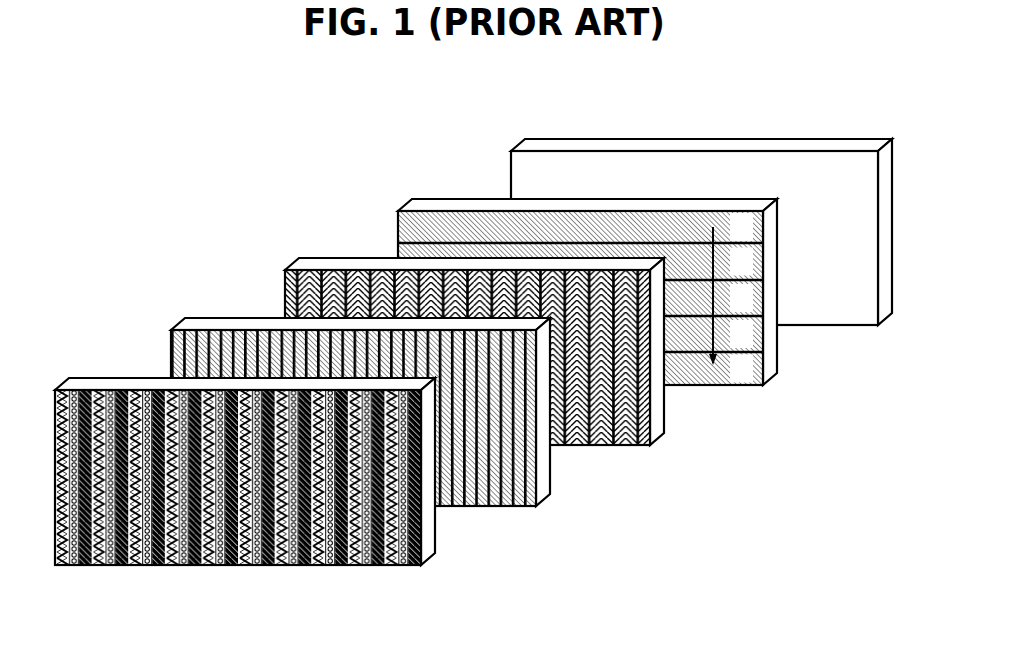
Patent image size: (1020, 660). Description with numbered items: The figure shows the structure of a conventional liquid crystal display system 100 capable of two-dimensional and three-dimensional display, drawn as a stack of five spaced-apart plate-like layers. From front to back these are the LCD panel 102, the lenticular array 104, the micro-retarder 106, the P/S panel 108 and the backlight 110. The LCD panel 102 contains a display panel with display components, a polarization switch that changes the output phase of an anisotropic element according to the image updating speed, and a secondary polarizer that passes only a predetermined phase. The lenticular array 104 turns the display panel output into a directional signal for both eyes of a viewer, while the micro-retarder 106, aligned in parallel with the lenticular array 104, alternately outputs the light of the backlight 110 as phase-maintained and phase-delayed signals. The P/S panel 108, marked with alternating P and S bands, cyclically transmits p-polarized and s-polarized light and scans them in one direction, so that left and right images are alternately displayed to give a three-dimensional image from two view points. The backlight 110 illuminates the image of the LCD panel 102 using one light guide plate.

The conventional LCD system 100 is at (200, 190).
The LCD panel 102 is at (372, 566).
The lenticular array 104 is at (488, 508).
The micro-retarder 106 is at (602, 447).
The P/S panel 108 is at (715, 385).
The backlight 110 is at (828, 327).